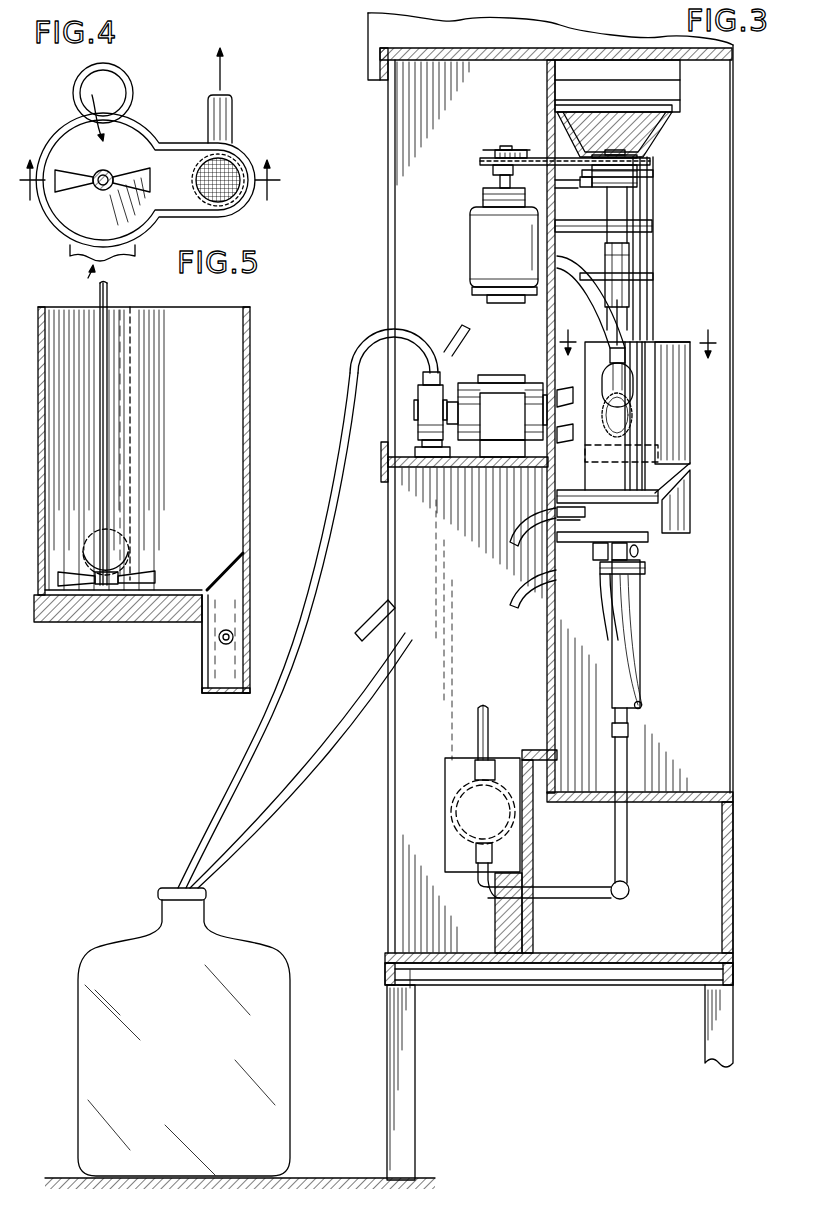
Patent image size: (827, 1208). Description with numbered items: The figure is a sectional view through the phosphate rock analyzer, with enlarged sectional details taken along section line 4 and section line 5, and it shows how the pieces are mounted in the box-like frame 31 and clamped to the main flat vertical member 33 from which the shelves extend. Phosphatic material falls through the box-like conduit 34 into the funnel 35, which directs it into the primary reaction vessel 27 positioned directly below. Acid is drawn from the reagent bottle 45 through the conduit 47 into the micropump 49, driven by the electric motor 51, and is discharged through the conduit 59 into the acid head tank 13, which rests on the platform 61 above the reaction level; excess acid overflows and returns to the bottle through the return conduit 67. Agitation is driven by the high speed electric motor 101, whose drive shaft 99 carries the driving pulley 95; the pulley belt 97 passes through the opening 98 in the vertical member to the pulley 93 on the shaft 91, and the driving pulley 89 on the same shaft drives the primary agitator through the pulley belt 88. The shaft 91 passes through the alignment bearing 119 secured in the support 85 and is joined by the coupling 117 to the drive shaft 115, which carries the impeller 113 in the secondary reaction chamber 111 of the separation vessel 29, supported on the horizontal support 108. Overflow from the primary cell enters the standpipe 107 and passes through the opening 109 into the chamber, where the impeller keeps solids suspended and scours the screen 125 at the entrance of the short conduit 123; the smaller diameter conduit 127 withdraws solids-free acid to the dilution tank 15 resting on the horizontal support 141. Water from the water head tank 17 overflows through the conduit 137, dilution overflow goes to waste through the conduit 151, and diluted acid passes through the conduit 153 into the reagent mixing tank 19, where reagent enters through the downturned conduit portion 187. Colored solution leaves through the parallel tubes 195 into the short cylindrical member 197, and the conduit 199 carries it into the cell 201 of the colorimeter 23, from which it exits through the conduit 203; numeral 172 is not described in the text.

In FIG. 3, the section line 4- 4 is at (638, 344).
In FIG. 4, the section line 5- 5 is at (156, 192).
In FIG. 3, the acid head tank 13 is at (656, 245).
In FIG. 3, the dilution tank 15 is at (588, 457).
In FIG. 3, the water head tank 17 is at (652, 162).
In FIG. 3, the reagent mixing tank 19 is at (641, 628).
In FIG. 3, the colorimeter 23 is at (456, 760).
In FIG. 3, the primary reaction vessel 27 is at (648, 290).
In FIG. 3, the separation vessel 29 is at (688, 404).
In FIG. 4, the separation vessel 29 is at (144, 123).
In FIG. 5, the separation vessel 29 is at (248, 354).
In FIG. 3, the frame 31 is at (386, 806).
In FIG. 3, the main flat vertical member 33 is at (547, 82).
In FIG. 3, the box-like conduit 34 is at (680, 95).
In FIG. 3, the funnel 35 is at (672, 120).
In FIG. 3, the reagent bottle 45 is at (285, 1040).
In FIG. 3, the conduit 47 is at (318, 580).
In FIG. 3, the micropump 49 is at (441, 386).
In FIG. 3, the electric motor 51 is at (500, 380).
In FIG. 3, the conduit 59 is at (450, 340).
In FIG. 3, the platform 61 is at (655, 276).
In FIG. 3, the return conduit 67 is at (312, 712).
In FIG. 3, the support 85 is at (652, 222).
In FIG. 3, the pulley belt 88 is at (600, 182).
In FIG. 3, the driving pulley 89 is at (655, 175).
In FIG. 3, the shaft 91 is at (614, 150).
In FIG. 3, the pulley 93 is at (640, 165).
In FIG. 3, the driving pulley 95 is at (490, 152).
In FIG. 3, the pulley belt 97 is at (546, 158).
In FIG. 3, the opening 98 is at (511, 180).
In FIG. 3, the drive shaft 99 is at (505, 150).
In FIG. 3, the electric motor 101 is at (475, 252).
In FIG. 4, the standpipe 107 is at (128, 76).
In FIG. 5, the standpipe 107 is at (128, 364).
In FIG. 3, the horizontal support 108 is at (660, 497).
In FIG. 5, the horizontal support 108 is at (128, 622).
In FIG. 4, the opening 109 is at (88, 118).
In FIG. 5, the opening 109 is at (118, 540).
In FIG. 5, the secondary reaction chamber 111 is at (222, 428).
In FIG. 4, the impeller 113 is at (80, 190).
In FIG. 5, the impeller 113 is at (152, 572).
In FIG. 3, the drive shaft 115 is at (630, 323).
In FIG. 4, the drive shaft 115 is at (108, 172).
In FIG. 5, the drive shaft 115 is at (108, 410).
In FIG. 3, the coupling 117 is at (630, 260).
In FIG. 3, the alignment bearing 119 is at (632, 414).
In FIG. 4, the alignment bearing 119 is at (75, 253).
In FIG. 3, the short conduit 123 is at (691, 515).
In FIG. 5, the short conduit 123 is at (202, 660).
In FIG. 4, the screen 125 is at (232, 198).
In FIG. 5, the screen 125 is at (225, 560).
In FIG. 4, the smaller diameter conduit 127 is at (232, 118).
In FIG. 5, the smaller diameter conduit 127 is at (218, 637).
In FIG. 3, the conduit 137 is at (562, 302).
In FIG. 3, the horizontal support 141 is at (650, 540).
In FIG. 3, the conduit 151 is at (641, 703).
In FIG. 3, the conduit 153 is at (646, 568).
In FIG. 3, the drain tube 172 is at (603, 577).
In FIG. 3, the downturned conduit portion 187 is at (640, 554).
In FIG. 3, the parallel tubes 195 is at (628, 837).
In FIG. 3, the short cylindrical member 197 is at (630, 893).
In FIG. 3, the conduit 199 is at (592, 900).
In FIG. 3, the cell 201 is at (468, 824).
In FIG. 3, the conduit 203 is at (478, 707).